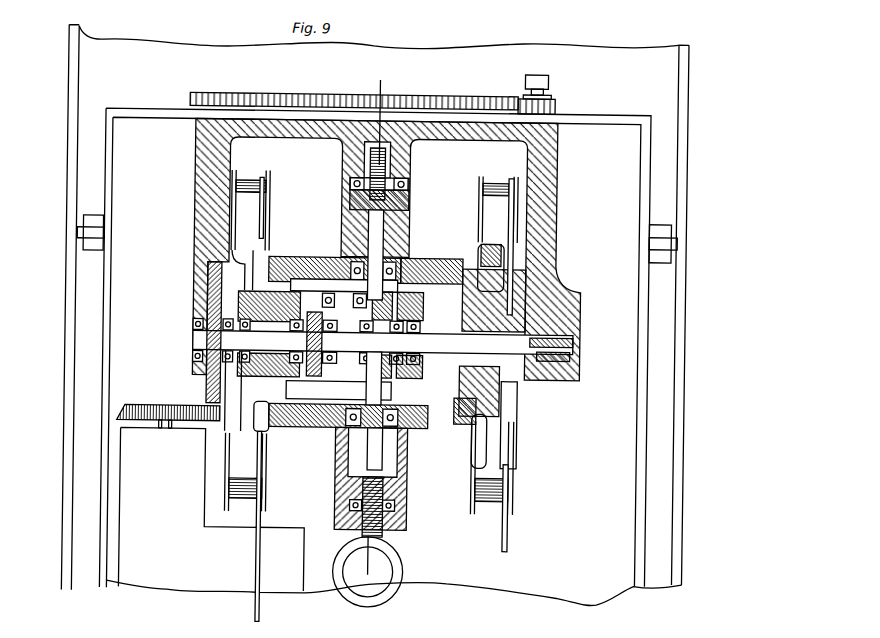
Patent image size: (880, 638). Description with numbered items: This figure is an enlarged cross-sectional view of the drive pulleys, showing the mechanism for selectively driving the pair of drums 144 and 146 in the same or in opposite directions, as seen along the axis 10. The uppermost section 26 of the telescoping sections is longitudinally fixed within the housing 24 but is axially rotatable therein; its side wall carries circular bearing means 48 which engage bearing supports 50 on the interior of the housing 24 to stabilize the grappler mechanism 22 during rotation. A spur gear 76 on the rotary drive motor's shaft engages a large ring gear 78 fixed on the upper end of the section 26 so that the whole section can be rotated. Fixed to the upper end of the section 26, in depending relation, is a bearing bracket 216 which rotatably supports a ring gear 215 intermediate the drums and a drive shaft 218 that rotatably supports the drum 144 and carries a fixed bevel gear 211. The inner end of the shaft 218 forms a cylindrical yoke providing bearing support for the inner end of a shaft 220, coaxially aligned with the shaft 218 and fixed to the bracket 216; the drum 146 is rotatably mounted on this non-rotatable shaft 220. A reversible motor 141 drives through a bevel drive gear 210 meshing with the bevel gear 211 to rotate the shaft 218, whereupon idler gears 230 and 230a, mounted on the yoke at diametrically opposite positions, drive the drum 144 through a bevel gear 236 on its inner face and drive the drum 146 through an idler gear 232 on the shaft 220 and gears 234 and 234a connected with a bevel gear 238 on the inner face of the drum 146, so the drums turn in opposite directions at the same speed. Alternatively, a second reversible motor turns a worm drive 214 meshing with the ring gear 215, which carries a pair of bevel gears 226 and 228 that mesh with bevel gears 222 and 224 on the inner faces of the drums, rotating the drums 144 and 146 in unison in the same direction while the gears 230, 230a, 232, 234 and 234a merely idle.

The axis line 10 is at (400, 130).
The grappler mechanism 22 is at (688, 383).
The housing 24 is at (66, 307).
The uppermost section 26 is at (103, 367).
The bearing means 48 is at (86, 219).
The bearing supports 50 is at (88, 236).
The spur gear 76 is at (550, 92).
The ring gear 78 is at (477, 97).
The motor 141 is at (182, 553).
The drum 144 is at (240, 202).
The drum 146 is at (518, 190).
The bevel drive gear 210 is at (148, 399).
The bevel gear 211 is at (210, 291).
The worm drive 214 is at (405, 566).
The ring gear 215 is at (383, 162).
The bearing bracket 216 is at (556, 152).
The drive shaft 218 is at (200, 342).
The shaft 220 is at (575, 348).
The bevel gear 222 is at (266, 436).
The bevel gear 224 is at (473, 407).
The bevel gear 226 is at (327, 426).
The bevel gear 228 is at (465, 262).
The idler gear 230 is at (382, 412).
The idler gear 230a is at (312, 292).
The idler gear 232 is at (430, 260).
The idler gear 234 is at (443, 413).
The idler gear 234a is at (388, 310).
The bevel gear 236 is at (300, 258).
The bevel gear 238 is at (455, 272).